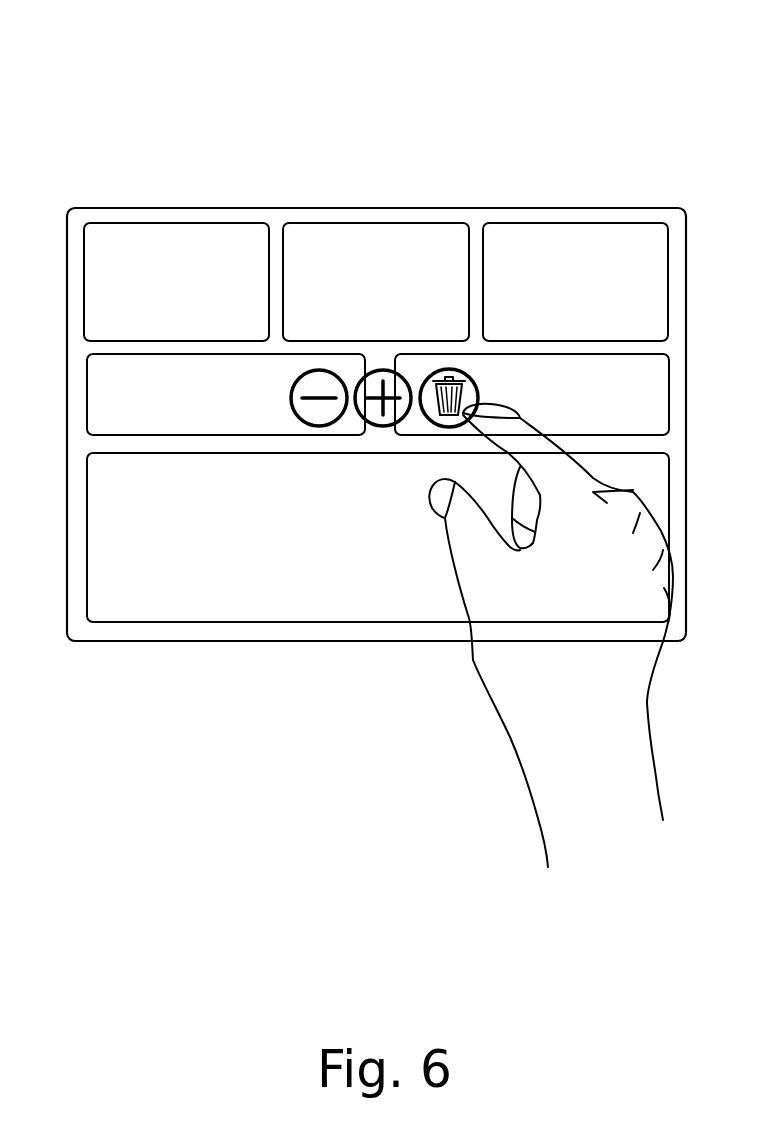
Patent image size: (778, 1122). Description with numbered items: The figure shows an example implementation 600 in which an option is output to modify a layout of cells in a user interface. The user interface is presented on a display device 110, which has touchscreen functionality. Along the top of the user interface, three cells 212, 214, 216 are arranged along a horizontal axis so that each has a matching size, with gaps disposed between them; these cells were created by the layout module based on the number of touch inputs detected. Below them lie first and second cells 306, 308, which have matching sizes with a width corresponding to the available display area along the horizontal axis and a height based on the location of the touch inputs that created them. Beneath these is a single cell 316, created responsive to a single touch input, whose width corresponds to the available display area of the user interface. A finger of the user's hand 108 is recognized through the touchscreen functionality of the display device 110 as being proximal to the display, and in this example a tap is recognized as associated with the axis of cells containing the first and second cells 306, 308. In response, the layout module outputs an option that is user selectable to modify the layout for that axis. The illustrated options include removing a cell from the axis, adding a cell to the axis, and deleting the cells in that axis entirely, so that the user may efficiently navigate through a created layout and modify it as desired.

The example implementation 600 is at (115, 54).
The display device 110 is at (376, 208).
The cell 212 is at (159, 292).
The cell 214 is at (359, 292).
The cell 216 is at (559, 292).
The first cell 306 is at (211, 402).
The second cell 308 is at (516, 402).
The single cell 316 is at (371, 546).
The hand 108 is at (554, 633).